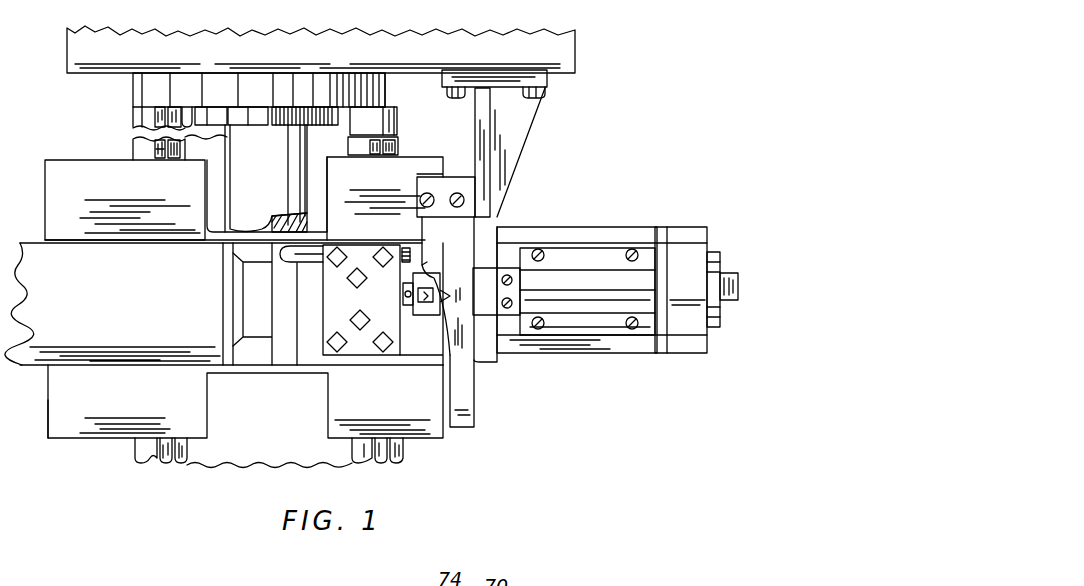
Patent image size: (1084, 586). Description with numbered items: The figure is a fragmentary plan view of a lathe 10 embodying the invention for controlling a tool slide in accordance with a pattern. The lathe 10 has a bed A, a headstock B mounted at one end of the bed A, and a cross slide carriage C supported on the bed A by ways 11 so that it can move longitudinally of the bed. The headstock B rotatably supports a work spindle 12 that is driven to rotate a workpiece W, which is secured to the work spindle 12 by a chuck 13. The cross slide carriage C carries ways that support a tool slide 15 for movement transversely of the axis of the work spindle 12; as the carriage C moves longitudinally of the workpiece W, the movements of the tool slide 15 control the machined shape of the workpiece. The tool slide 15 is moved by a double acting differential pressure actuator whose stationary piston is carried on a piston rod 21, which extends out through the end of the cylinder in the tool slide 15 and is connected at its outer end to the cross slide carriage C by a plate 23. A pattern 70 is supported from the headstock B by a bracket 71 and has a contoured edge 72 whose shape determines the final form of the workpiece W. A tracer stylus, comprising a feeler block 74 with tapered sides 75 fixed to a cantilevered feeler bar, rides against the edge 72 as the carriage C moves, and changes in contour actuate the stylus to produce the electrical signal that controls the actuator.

The lathe 10 is at (406, 453).
The ways 11 is at (153, 151).
The work spindle 12 is at (386, 92).
The chuck 13 is at (386, 116).
The tool slide 15 is at (430, 350).
The piston rod 21 is at (683, 287).
The plate 23 is at (712, 330).
The pattern 70 is at (472, 404).
The bracket 71 is at (523, 129).
The contoured edge 72 is at (444, 381).
The feeler block 74 is at (438, 326).
The sides 75 is at (438, 290).
The bed A is at (134, 456).
The headstock B is at (133, 92).
The cross slide carriage C is at (455, 240).
The workpiece W is at (258, 171).